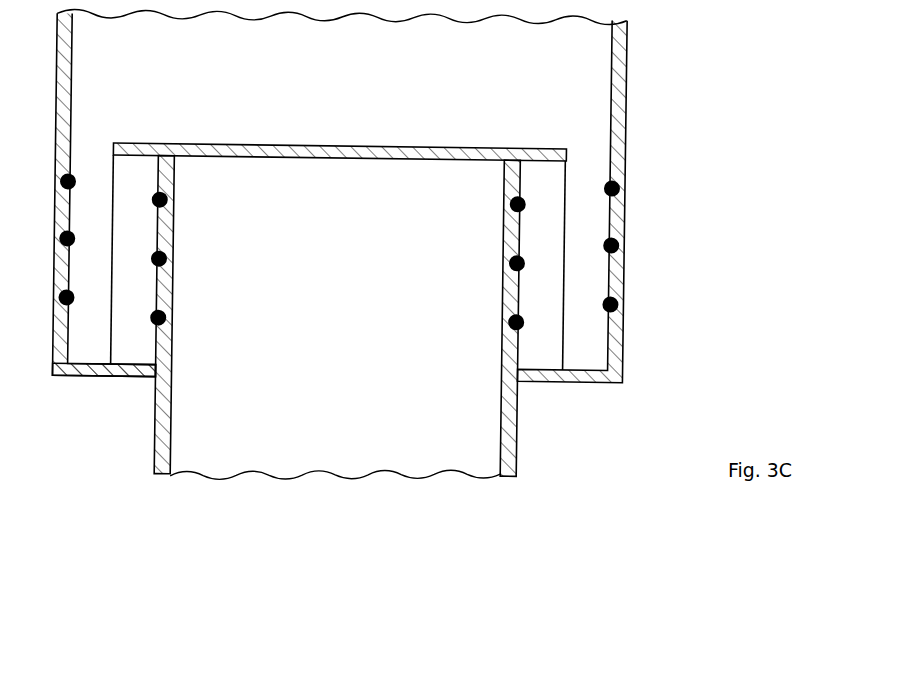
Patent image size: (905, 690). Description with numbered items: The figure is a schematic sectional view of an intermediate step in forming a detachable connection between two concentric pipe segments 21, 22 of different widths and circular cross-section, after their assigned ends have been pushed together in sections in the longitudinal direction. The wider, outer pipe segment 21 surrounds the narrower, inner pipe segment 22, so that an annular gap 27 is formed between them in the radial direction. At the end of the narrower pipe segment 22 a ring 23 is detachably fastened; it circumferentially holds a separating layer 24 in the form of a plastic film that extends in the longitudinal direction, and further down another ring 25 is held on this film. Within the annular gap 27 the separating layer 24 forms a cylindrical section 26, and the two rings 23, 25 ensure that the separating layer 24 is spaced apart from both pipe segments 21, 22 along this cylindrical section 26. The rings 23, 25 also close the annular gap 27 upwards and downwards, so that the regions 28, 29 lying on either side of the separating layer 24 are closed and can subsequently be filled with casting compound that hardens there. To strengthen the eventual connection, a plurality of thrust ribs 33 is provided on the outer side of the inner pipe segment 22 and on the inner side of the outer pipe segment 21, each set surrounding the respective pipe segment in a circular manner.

The pipe segment 21 is at (618, 87).
The pipe segment 22 is at (513, 440).
The ring 23 is at (536, 148).
The separating layer 24 is at (115, 297).
The ring 25 is at (93, 377).
The cylindrical section 26 is at (579, 220).
The annular gap 27 is at (578, 133).
The region 28 is at (97, 165).
The region 29 is at (133, 235).
The thrust ribs 33 is at (518, 203).